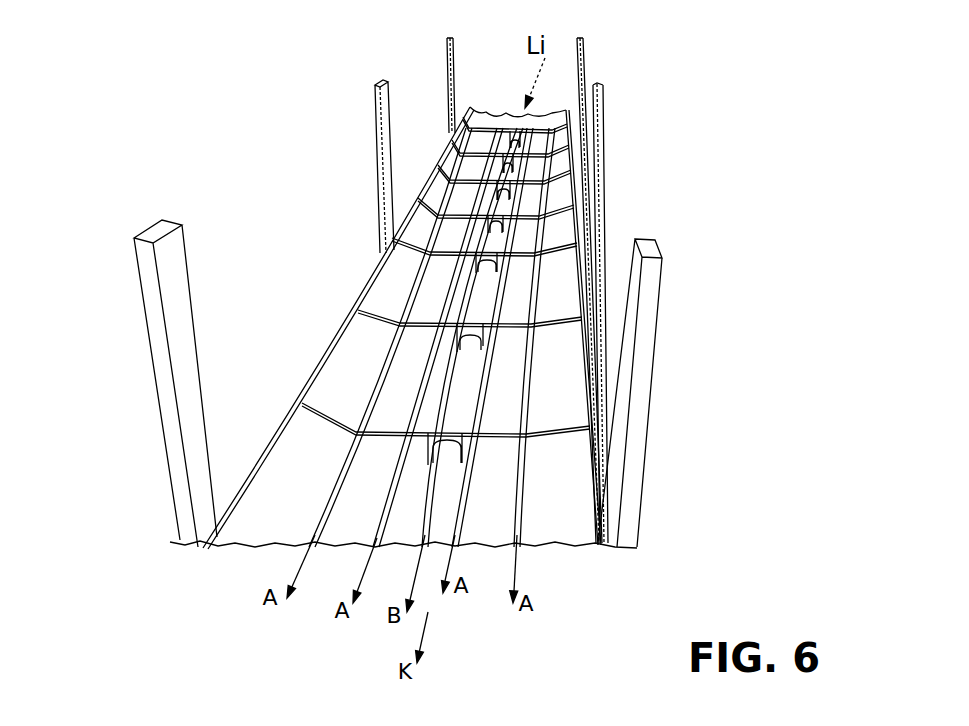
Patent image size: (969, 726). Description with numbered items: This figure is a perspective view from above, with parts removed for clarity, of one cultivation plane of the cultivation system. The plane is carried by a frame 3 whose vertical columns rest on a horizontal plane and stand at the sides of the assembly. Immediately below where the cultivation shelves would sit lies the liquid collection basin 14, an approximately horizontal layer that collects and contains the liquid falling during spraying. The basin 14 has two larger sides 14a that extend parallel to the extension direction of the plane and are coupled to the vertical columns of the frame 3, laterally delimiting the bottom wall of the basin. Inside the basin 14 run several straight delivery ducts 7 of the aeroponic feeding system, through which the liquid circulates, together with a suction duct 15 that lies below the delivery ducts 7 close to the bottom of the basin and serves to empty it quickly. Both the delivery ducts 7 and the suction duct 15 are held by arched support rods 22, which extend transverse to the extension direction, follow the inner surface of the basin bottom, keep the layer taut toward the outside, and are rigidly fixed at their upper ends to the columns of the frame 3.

The frame 3 is at (447, 46).
The delivery duct 7 is at (460, 290).
The liquid collection basin 14 is at (568, 390).
The larger side 14a is at (578, 207).
The suction duct 15 is at (452, 407).
The support rod 22 is at (482, 118).